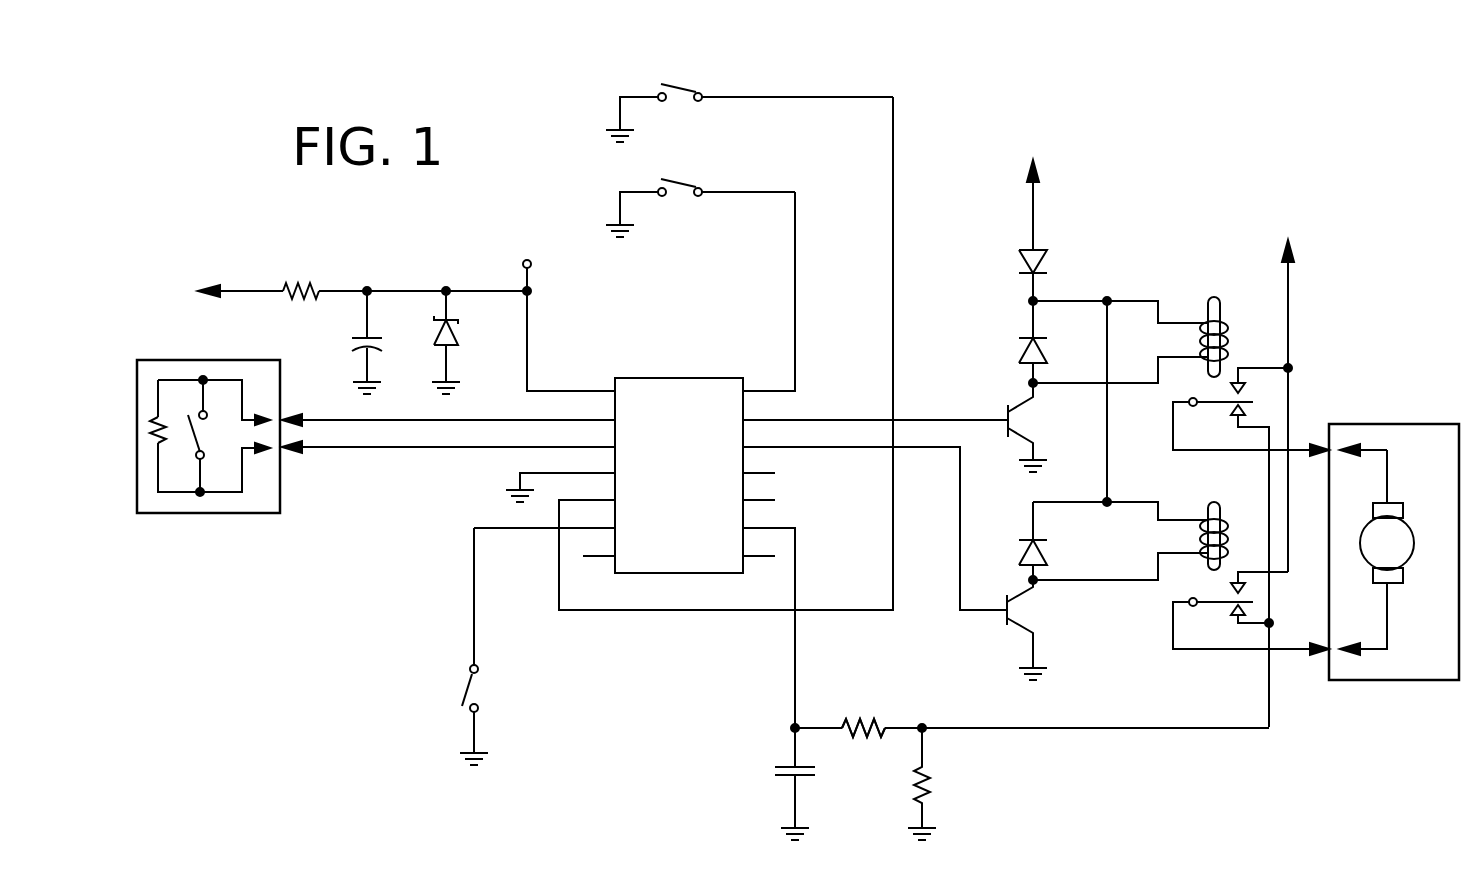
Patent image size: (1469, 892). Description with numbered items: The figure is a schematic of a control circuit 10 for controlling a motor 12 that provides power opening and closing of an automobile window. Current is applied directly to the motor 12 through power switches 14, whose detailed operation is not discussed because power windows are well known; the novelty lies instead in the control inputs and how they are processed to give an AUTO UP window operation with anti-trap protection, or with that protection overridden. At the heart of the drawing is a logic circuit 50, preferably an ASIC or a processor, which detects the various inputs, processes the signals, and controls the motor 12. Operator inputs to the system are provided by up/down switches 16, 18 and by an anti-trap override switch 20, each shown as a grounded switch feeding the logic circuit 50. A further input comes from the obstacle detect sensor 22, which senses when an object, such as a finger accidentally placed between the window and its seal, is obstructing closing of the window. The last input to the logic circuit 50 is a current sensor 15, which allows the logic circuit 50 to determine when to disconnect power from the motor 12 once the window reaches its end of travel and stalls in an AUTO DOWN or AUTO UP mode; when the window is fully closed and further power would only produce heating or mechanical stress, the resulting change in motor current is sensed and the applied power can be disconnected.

The control circuit 10 is at (566, 219).
The motor 12 is at (1379, 412).
The power switches 14 is at (1256, 240).
The current sensor 15 is at (902, 713).
The up/down switch 16 is at (677, 182).
The up/down switch 18 is at (677, 88).
The anti-trap override switch 20 is at (460, 690).
The obstacle detect sensor 22 is at (226, 353).
The logic circuit 50 is at (676, 364).